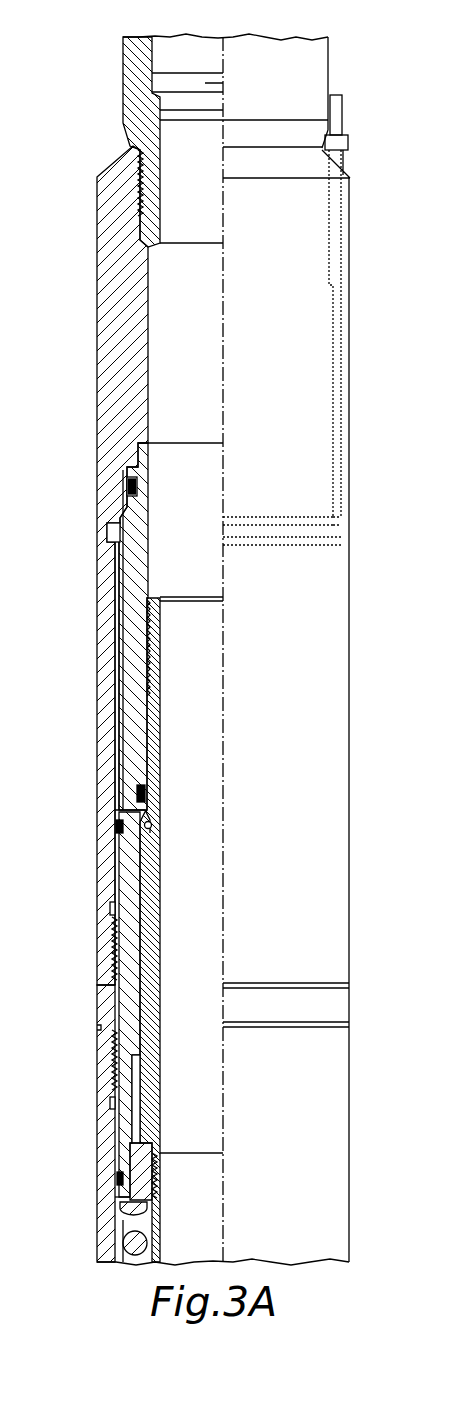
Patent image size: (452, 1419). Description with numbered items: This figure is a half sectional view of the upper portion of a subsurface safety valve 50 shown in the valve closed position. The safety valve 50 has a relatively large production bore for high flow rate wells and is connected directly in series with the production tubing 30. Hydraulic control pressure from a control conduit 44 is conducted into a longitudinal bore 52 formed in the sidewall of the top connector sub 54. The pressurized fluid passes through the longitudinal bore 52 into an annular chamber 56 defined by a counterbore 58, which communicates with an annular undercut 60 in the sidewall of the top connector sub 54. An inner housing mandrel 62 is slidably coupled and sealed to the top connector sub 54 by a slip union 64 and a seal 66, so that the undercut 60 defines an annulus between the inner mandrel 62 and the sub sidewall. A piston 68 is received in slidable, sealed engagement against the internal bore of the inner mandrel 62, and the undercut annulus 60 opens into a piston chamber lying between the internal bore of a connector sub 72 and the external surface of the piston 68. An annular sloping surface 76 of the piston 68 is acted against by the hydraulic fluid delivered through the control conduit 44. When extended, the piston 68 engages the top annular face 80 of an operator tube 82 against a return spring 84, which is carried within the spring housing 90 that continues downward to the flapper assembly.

The production tubing 30 is at (127, 73).
The control conduit 44 is at (338, 117).
The subsurface safety valve 50 is at (383, 283).
The longitudinal bore 52 is at (333, 337).
The top connector sub 54 is at (103, 270).
The annular chamber 56 is at (340, 537).
The counterbore 58 is at (110, 538).
The annular undercut 60 is at (117, 625).
The inner housing mandrel 62 is at (130, 695).
The slip union 64 is at (132, 462).
The seal 66 is at (127, 480).
The piston 68 is at (162, 1092).
The connector sub 72 is at (97, 993).
The annular sloping surface 76 is at (150, 822).
The top annular face 80 is at (192, 1152).
The operator tube 82 is at (158, 1245).
The return spring 84 is at (118, 1248).
The spring housing 90 is at (102, 1207).